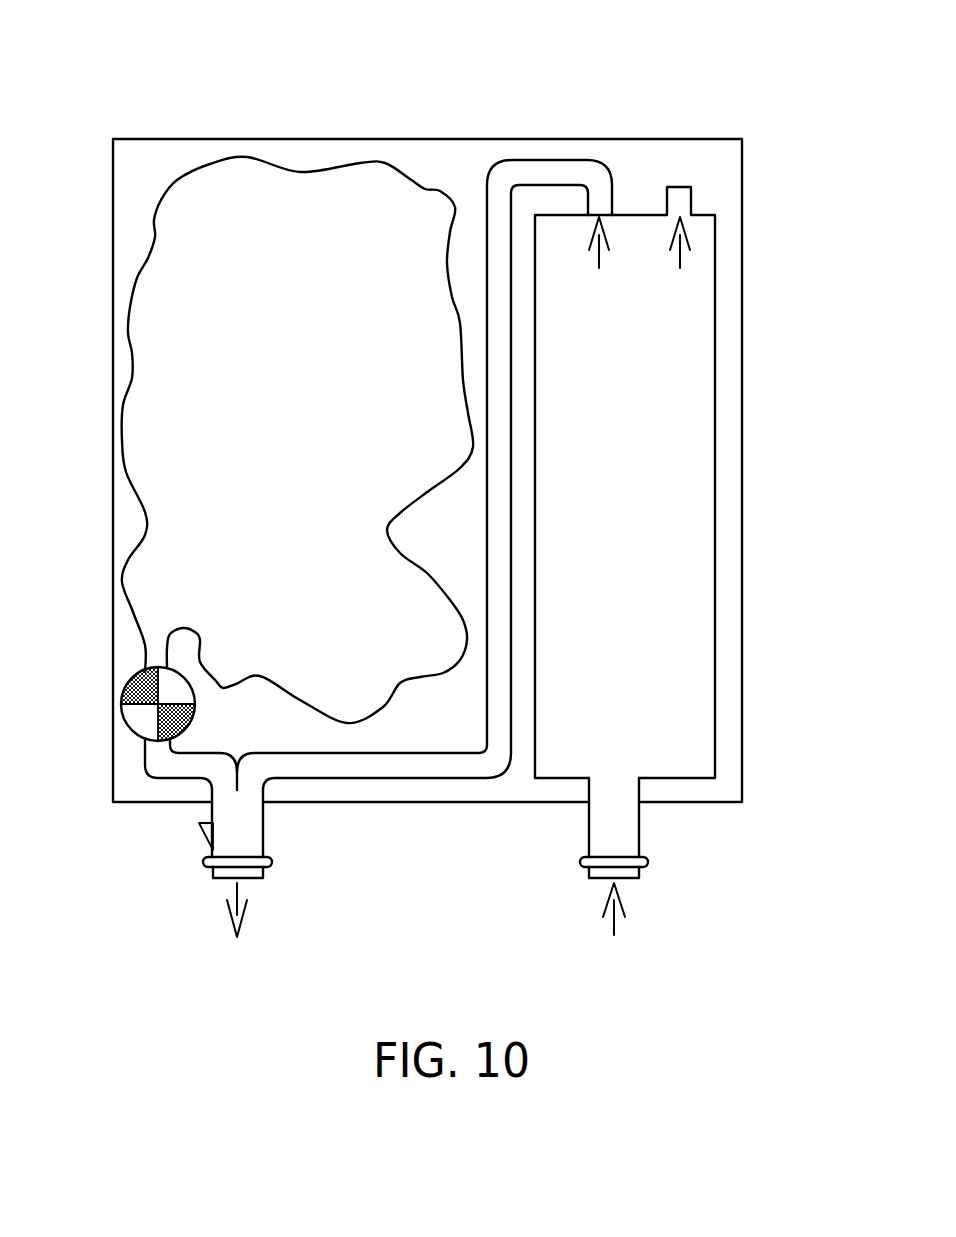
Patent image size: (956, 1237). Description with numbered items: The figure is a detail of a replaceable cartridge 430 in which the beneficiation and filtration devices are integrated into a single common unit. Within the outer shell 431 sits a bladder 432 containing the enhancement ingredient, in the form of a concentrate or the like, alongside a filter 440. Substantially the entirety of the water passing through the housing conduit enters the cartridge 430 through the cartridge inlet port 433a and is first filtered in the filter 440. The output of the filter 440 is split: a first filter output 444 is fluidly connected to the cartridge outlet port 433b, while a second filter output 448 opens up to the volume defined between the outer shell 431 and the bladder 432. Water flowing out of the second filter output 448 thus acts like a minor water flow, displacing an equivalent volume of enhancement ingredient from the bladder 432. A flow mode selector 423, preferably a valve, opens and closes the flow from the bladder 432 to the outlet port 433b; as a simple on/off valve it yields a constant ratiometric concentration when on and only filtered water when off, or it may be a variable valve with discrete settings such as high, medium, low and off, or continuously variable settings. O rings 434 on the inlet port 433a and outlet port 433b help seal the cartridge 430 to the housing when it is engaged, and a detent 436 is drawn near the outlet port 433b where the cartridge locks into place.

The integrated cartridge 430 is at (222, 70).
The outer shell 431 is at (691, 137).
The bladder 432 is at (153, 237).
The flow mode selector 423 is at (128, 683).
The filter 440 is at (718, 357).
The first filter output 444 is at (599, 268).
The second filter output 448 is at (680, 268).
The cartridge inlet port 433a is at (627, 822).
The cartridge outlet port 433b is at (251, 828).
The O rings 434 is at (273, 864).
The check flap 436 is at (203, 832).